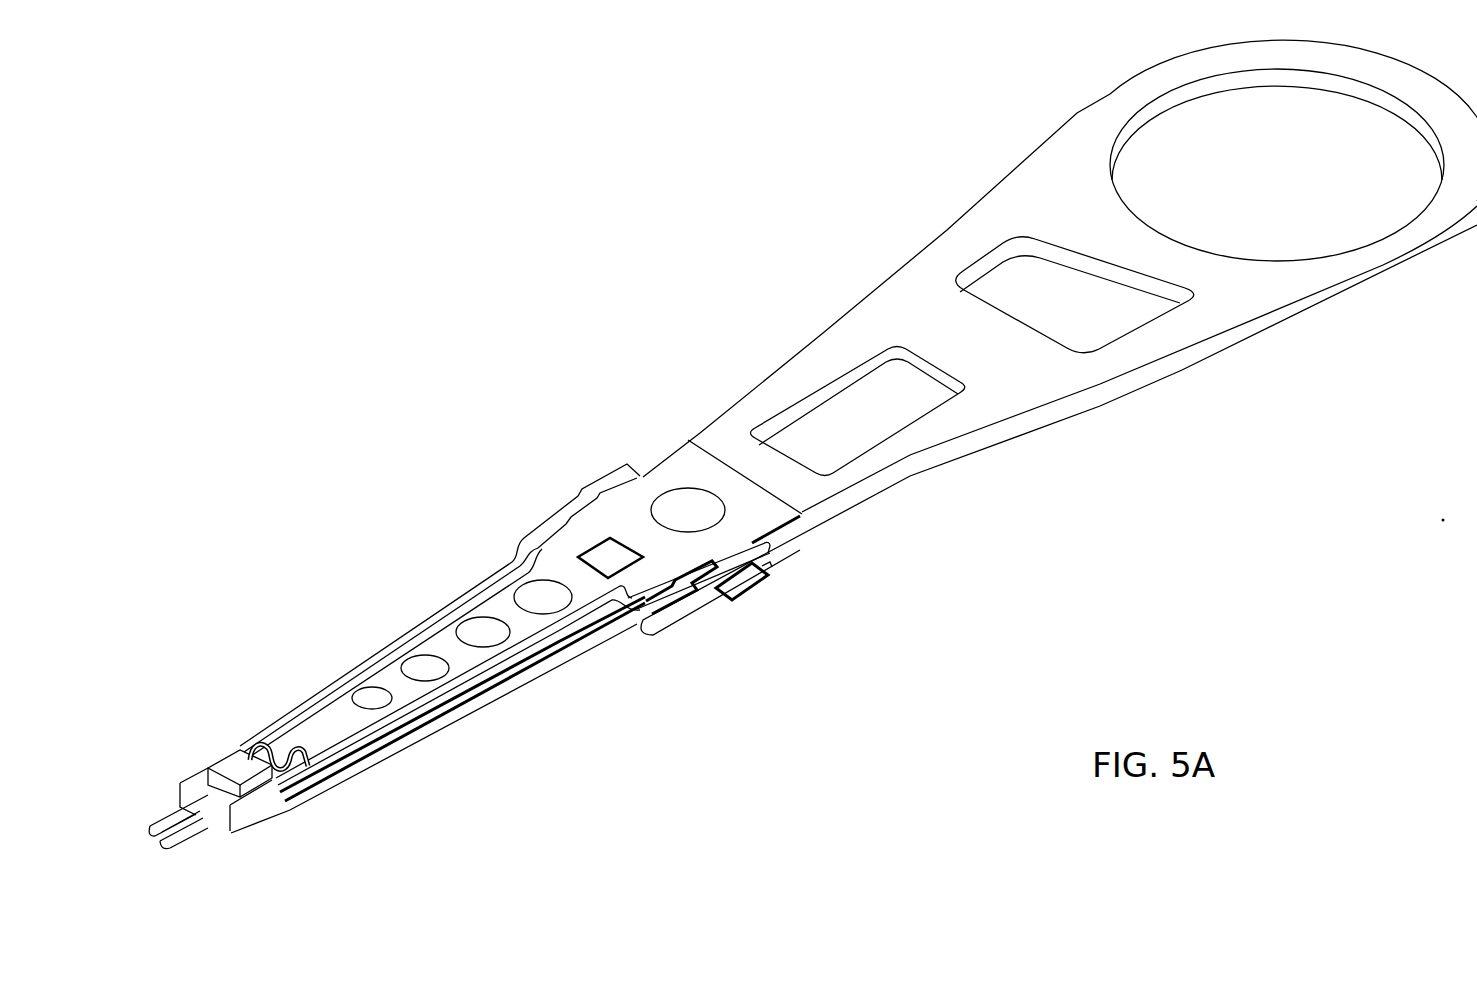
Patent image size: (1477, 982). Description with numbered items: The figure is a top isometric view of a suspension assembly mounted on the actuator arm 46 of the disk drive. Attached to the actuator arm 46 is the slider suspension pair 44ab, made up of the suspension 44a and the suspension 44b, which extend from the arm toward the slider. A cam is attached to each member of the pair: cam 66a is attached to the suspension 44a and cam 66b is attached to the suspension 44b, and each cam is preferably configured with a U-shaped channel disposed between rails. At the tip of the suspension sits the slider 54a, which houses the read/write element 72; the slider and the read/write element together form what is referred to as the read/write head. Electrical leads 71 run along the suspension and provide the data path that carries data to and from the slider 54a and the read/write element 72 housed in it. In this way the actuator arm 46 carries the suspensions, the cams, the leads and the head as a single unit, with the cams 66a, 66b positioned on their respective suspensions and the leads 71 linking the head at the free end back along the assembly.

The actuator arm 46 is at (1022, 172).
The suspension 44a is at (673, 463).
The slider suspension pair 44ab is at (352, 652).
The electrical leads 71 is at (563, 497).
The suspension 44b is at (613, 637).
The slider 54a is at (230, 760).
The cam 66a is at (168, 826).
The cam 66b is at (222, 822).
The read/write element 72 is at (252, 760).